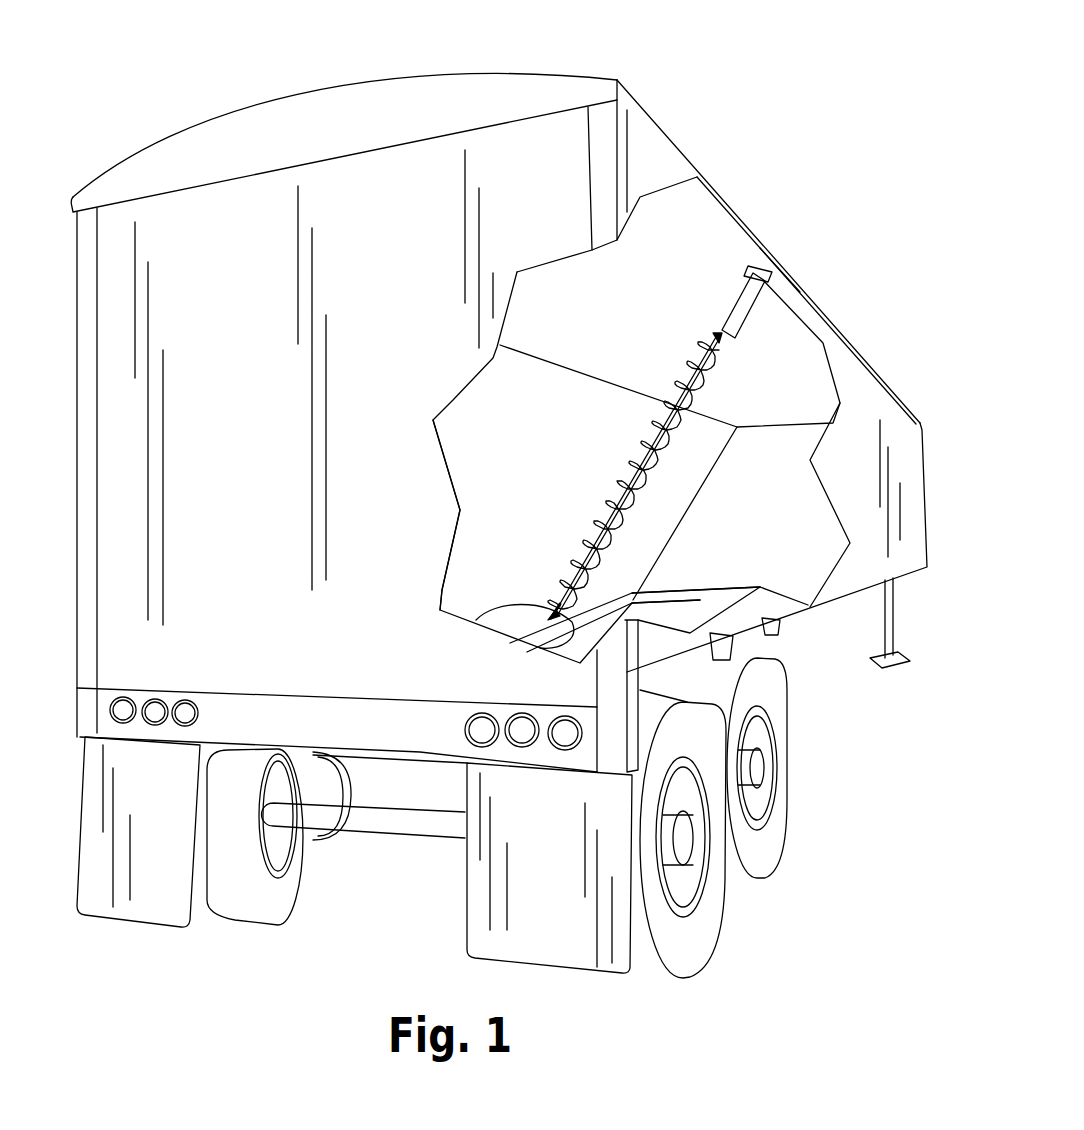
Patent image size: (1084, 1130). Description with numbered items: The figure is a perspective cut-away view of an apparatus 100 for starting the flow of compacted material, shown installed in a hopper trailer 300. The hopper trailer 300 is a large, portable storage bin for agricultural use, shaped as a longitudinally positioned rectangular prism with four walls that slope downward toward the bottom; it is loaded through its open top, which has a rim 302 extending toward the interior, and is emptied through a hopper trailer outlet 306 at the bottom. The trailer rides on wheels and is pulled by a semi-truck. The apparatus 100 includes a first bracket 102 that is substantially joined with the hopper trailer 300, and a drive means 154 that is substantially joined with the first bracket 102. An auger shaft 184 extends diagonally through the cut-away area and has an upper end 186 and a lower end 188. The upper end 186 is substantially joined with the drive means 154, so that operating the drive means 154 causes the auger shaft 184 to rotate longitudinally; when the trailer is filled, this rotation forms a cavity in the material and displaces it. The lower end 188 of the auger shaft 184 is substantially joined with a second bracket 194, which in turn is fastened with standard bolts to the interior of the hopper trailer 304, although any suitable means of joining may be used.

The apparatus 100 is at (652, 464).
The first bracket 102 is at (790, 281).
The drive means 154 is at (723, 315).
The auger shaft 184 is at (722, 363).
The upper end 186 is at (712, 350).
The lower end 188 is at (553, 614).
The second bracket 194 is at (510, 612).
The hopper trailer 300 is at (527, 83).
The rim 302 is at (713, 207).
The interior of the hopper trailer 304 is at (478, 467).
The hopper trailer outlet 306 is at (618, 622).